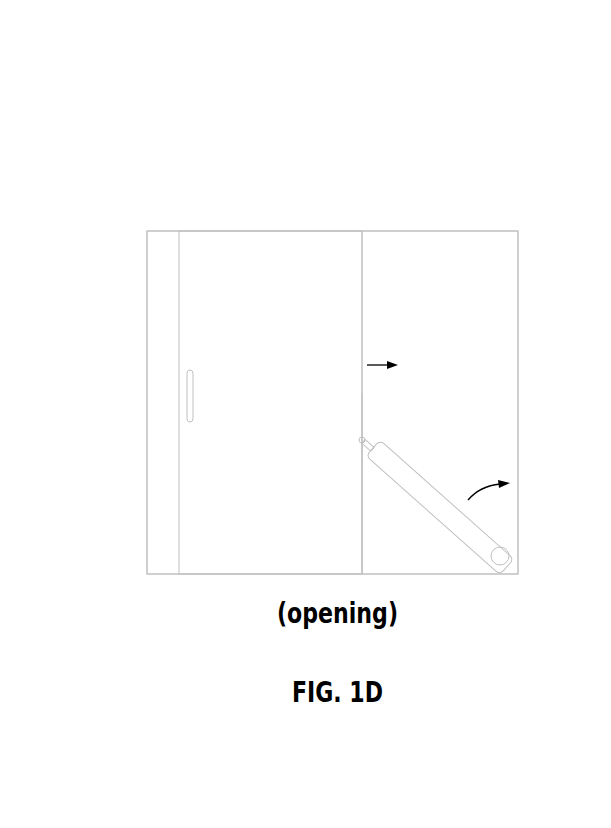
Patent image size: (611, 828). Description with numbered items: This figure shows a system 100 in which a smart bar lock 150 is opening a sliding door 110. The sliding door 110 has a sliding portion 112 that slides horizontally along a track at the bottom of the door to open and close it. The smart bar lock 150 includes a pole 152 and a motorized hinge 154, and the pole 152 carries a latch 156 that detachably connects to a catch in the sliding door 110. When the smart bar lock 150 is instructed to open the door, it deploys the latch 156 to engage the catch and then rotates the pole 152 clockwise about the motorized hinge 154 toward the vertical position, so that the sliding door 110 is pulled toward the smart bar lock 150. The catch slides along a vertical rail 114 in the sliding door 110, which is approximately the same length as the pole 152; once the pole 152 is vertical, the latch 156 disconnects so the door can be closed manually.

The system 100 is at (163, 82).
The sliding door 110 is at (511, 212).
The sliding portion 112 is at (178, 322).
The vertical rail 114 is at (353, 393).
The smart bar lock 150 is at (516, 582).
The pole 152 is at (417, 469).
The motorized hinge 154 is at (507, 553).
The latch 156 is at (366, 438).